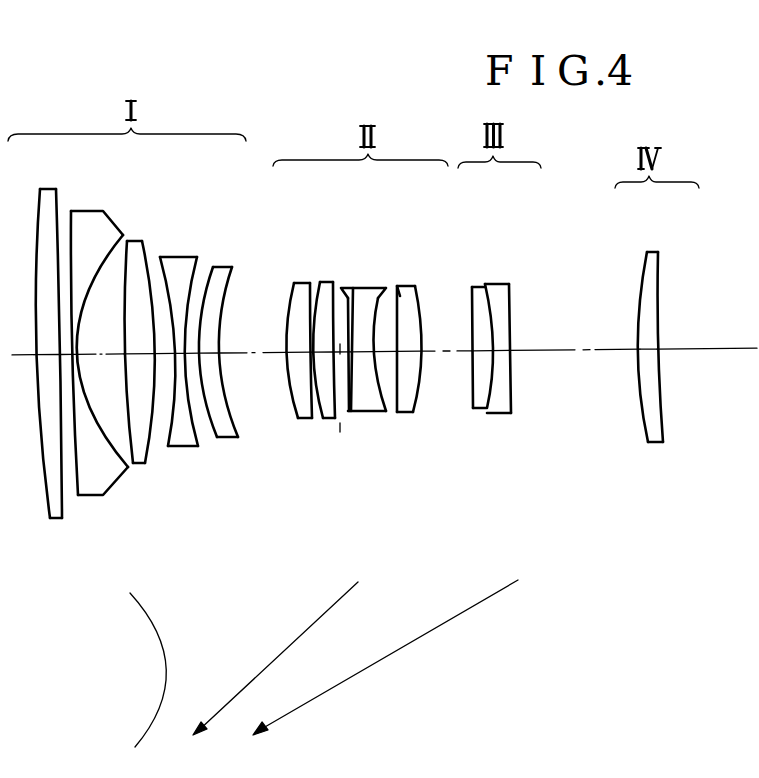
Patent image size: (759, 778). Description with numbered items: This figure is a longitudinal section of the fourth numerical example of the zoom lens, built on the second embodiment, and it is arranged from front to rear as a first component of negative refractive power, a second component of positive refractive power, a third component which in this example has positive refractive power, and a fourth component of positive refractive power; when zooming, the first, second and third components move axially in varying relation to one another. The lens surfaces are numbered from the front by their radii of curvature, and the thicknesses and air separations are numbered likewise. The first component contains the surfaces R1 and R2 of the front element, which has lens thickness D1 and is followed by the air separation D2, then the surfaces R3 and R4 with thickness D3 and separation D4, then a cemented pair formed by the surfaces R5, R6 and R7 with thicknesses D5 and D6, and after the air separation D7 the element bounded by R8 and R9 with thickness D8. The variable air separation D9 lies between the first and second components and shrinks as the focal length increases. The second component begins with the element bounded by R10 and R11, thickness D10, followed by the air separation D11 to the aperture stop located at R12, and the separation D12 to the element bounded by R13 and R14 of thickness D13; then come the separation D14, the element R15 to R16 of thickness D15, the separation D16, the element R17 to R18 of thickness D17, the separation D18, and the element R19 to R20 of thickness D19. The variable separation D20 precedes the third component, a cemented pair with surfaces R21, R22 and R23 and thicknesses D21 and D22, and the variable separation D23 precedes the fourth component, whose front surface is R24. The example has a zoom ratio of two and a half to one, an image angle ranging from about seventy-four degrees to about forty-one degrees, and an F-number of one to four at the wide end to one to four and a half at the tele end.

The radius of curvature of first lens surface R1 is at (35, 225).
The radius of curvature of second lens surface R2 is at (52, 204).
The radius of curvature of third lens surface R3 is at (71, 212).
The radius of curvature of fourth lens surface R4 is at (91, 212).
The radius of curvature of fifth lens surface R5 is at (125, 240).
The radius of curvature of sixth lens surface R6 is at (142, 240).
The radius of curvature of seventh lens surface R7 is at (160, 257).
The radius of curvature of eighth lens surface R8 is at (197, 257).
The radius of curvature of ninth lens surface R9 is at (213, 267).
The radius of curvature of tenth lens surface R10 is at (233, 268).
The radius of curvature of eleventh lens surface R11 is at (293, 292).
The aperture stop R12 is at (302, 283).
The radius of curvature of thirteenth lens surface R13 is at (320, 282).
The radius of curvature of fourteenth lens surface R14 is at (336, 270).
The radius of curvature of fifteenth lens surface R15 is at (343, 288).
The radius of curvature of sixteenth lens surface R16 is at (357, 287).
The radius of curvature of seventeenth lens surface R17 is at (382, 288).
The radius of curvature of eighteenth lens surface R18 is at (400, 288).
The radius of curvature of nineteenth lens surface R19 is at (423, 295).
The radius of curvature of twentieth lens surface R20 is at (472, 288).
The radius of curvature of twenty-first lens surface R21 is at (492, 283).
The radius of curvature of twenty-second lens surface R22 is at (512, 286).
The radius of curvature of twenty-third lens surface R23 is at (647, 275).
The radius of curvature of twenty-fourth lens surface R24 is at (660, 275).
The first lens thickness D1 is at (36, 357).
The second air separation D2 is at (50, 357).
The third lens thickness D3 is at (73, 357).
The fourth air separation D4 is at (90, 357).
The fifth lens thickness D5 is at (137, 357).
The sixth lens thickness D6 is at (163, 356).
The seventh air separation D7 is at (185, 356).
The eighth lens thickness D8 is at (207, 356).
The ninth air separation D9 is at (222, 356).
The tenth lens thickness D10 is at (267, 355).
The eleventh air separation D11 is at (297, 368).
The twelfth air separation D12 is at (310, 368).
The thirteenth lens thickness D13 is at (326, 368).
The fourteenth air separation D14 is at (338, 367).
The fifteenth lens thickness D15 is at (352, 367).
The sixteenth air separation D16 is at (375, 367).
The seventeenth lens thickness D17 is at (396, 367).
The eighteenth air separation D18 is at (412, 367).
The nineteenth lens thickness D19 is at (442, 356).
The twentieth air separation D20 is at (482, 354).
The twenty-first lens thickness D21 is at (498, 354).
The twenty-second lens thickness D22 is at (565, 354).
The twenty-third air separation D23 is at (650, 354).